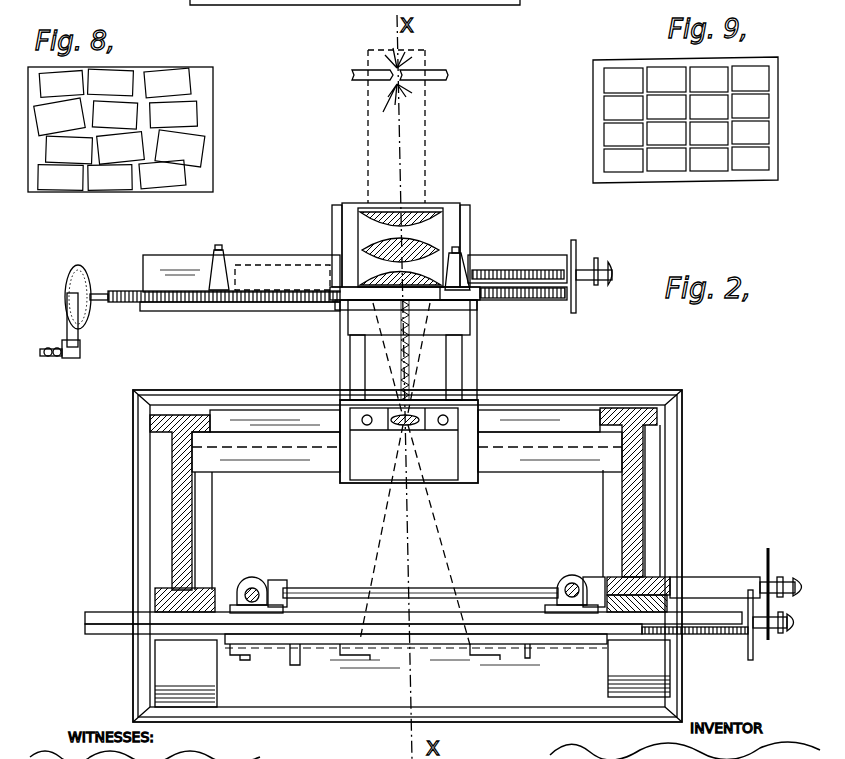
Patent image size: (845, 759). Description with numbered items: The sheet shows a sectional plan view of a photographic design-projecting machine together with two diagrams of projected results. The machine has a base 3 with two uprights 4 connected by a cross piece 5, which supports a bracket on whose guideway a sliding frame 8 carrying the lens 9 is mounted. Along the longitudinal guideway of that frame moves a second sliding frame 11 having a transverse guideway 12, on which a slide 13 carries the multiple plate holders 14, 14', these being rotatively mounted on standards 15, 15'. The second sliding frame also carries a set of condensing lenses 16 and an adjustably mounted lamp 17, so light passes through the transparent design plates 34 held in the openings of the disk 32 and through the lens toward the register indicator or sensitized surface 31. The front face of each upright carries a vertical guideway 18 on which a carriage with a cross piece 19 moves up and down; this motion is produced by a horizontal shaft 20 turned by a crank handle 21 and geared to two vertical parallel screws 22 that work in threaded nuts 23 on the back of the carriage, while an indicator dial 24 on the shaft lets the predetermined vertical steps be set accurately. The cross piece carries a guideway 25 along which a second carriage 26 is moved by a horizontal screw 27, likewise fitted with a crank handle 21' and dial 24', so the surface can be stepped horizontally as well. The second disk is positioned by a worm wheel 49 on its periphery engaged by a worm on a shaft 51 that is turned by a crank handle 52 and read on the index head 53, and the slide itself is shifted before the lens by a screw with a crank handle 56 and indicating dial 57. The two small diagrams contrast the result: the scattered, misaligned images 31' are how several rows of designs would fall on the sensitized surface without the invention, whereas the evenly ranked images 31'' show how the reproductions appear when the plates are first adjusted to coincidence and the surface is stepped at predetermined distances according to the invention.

In FIG. 2, the base 3 is at (672, 460).
In FIG. 2, the uprights 4 is at (175, 510).
In FIG. 2, the cross piece 5 is at (527, 435).
In FIG. 2, the sliding frame 8 is at (470, 410).
In FIG. 2, the lens 9 is at (400, 427).
In FIG. 2, the second sliding frame 11 is at (355, 360).
In FIG. 2, the transverse guideway 12 is at (515, 262).
In FIG. 2, the slide 13 is at (262, 268).
In FIG. 2, the multiple plate holder 14 is at (503, 308).
In FIG. 2, the multiple plate holder 14' is at (240, 322).
In FIG. 2, the standard 15 is at (485, 256).
In FIG. 2, the standard 15' is at (233, 254).
In FIG. 2, the condensing lenses 16 is at (440, 212).
In FIG. 2, the lamp 17 is at (410, 66).
In FIG. 2, the vertical guideway 18 is at (172, 622).
In FIG. 2, the cross piece 19 is at (90, 622).
In FIG. 2, the horizontal shaft 20 is at (497, 590).
In FIG. 2, the crank handle 21 is at (737, 572).
In FIG. 2, the adjusting knob 21' is at (774, 643).
In FIG. 2, the vertical screws 22 is at (262, 590).
In FIG. 2, the threaded nuts 23 is at (247, 578).
In FIG. 2, the indicator dial 24 is at (776, 581).
In FIG. 2, the disc 24' is at (764, 646).
In FIG. 2, the guideway 25 is at (103, 636).
In FIG. 2, the second carriage 26 is at (268, 645).
In FIG. 2, the horizontal screw 27 is at (718, 635).
In FIG. 2, the sensitized surface 31 is at (435, 698).
In FIG. 8, the film with scattered images 31' is at (131, 114).
In FIG. 9, the film with regular images 31'' is at (661, 120).
In FIG. 2, the disk 32 is at (535, 296).
In FIG. 2, the transparent design plates 34 is at (424, 350).
In FIG. 2, the worm wheel 49 is at (160, 302).
In FIG. 2, the shaft 51 is at (100, 296).
In FIG. 2, the crank handle 52 is at (63, 360).
In FIG. 2, the index head 53 is at (84, 272).
In FIG. 2, the crank handle 56 is at (590, 262).
In FIG. 2, the indicating dial 57 is at (578, 305).